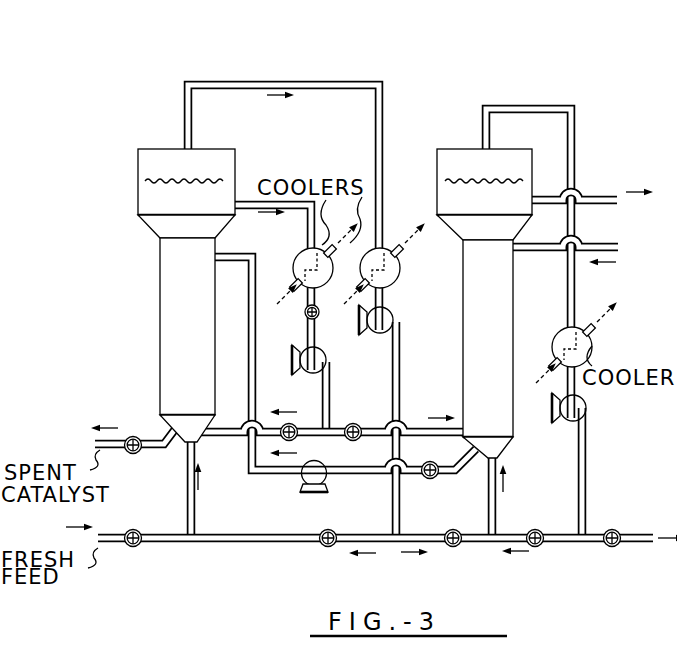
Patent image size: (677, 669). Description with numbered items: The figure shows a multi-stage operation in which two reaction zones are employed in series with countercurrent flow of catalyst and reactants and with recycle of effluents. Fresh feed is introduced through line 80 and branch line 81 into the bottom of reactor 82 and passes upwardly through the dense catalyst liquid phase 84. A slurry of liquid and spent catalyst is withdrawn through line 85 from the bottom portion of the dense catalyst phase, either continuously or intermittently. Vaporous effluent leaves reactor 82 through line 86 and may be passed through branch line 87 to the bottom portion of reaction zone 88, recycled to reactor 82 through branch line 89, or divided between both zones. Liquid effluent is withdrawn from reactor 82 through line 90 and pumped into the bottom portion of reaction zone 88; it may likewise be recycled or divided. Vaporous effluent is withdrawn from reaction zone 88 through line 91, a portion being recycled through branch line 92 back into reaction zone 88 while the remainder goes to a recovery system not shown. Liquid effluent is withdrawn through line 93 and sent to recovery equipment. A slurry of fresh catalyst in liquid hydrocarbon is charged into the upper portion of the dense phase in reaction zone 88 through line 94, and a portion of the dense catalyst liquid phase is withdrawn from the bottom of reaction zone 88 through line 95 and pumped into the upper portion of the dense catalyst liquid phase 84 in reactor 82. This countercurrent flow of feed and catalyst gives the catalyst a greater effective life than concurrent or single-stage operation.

The feed line 80 is at (182, 547).
The branch line 81 is at (198, 488).
The reactor 82 is at (160, 297).
The dense catalyst liquid phase 84 is at (178, 345).
The spent catalyst withdrawal line 85 is at (166, 449).
The vaporous effluent line 86 is at (306, 80).
The branch line 87 is at (496, 547).
The reaction zone 88 is at (464, 396).
The branch line 89 is at (316, 545).
The liquid effluent line 90 is at (306, 298).
The vaporous effluent line 91 is at (546, 100).
The branch line 92 is at (550, 543).
The liquid effluent line 93 is at (576, 194).
The fresh catalyst line 94 is at (576, 244).
The catalyst withdrawal line 95 is at (456, 478).